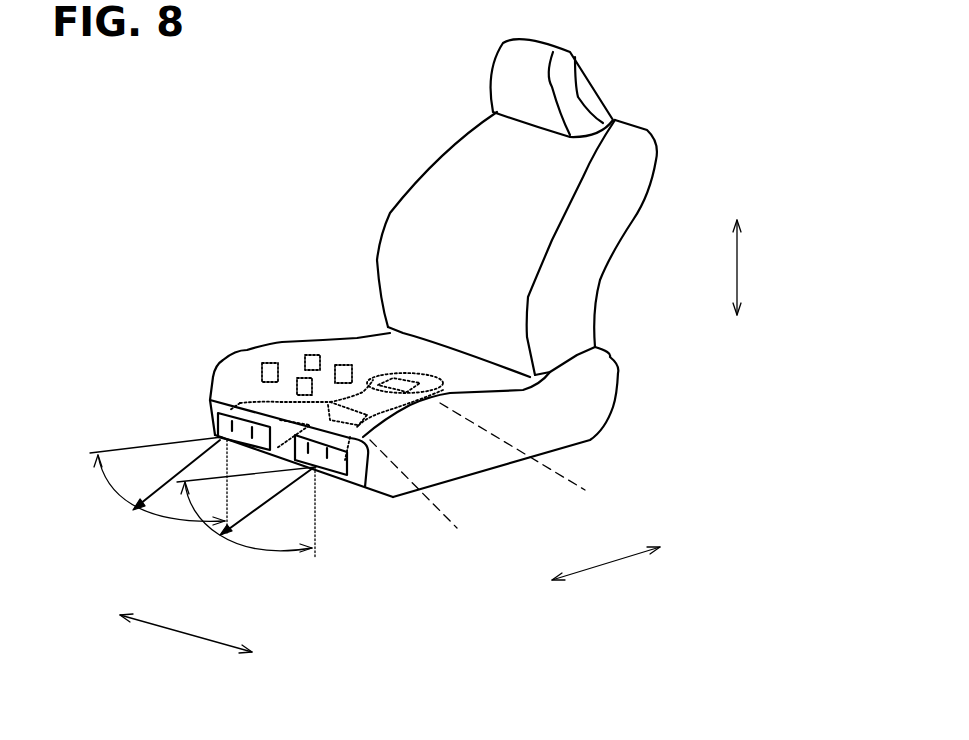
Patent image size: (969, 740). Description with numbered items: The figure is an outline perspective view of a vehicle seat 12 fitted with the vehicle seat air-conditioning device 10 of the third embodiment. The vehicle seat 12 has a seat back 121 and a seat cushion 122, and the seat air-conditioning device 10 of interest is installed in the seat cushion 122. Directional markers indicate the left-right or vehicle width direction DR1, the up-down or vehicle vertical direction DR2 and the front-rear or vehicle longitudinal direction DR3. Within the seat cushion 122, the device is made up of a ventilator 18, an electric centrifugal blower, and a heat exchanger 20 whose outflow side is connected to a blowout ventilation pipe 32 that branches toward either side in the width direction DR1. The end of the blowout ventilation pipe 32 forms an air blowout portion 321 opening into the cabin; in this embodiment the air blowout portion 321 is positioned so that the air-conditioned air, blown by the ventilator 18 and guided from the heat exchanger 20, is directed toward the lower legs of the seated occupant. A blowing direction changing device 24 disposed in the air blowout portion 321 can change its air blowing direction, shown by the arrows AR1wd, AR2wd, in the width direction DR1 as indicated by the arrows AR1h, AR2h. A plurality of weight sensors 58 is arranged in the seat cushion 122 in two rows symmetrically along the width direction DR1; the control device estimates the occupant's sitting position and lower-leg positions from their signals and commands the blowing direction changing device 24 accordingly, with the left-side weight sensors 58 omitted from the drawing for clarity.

The vehicle seat 12 is at (653, 130).
The seat back 121 is at (613, 218).
The seat cushion 122 is at (465, 450).
The ventilator 18 is at (517, 461).
The heat exchanger 20 is at (421, 499).
The vehicle seat air-conditioning device 10 is at (357, 489).
The blowing direction changing device 24 is at (332, 462).
The blowout ventilation pipe 32 is at (247, 392).
The weight sensors 58 is at (260, 362).
The air blowout portion 321 is at (213, 415).
The arrow AR1wd is at (172, 492).
The arrow AR1h is at (112, 495).
The arrow AR2wd is at (243, 517).
The arrow AR2h is at (275, 553).
The left-right direction DR1 is at (158, 628).
The up-down direction DR2 is at (738, 267).
The front-rear direction DR3 is at (620, 560).